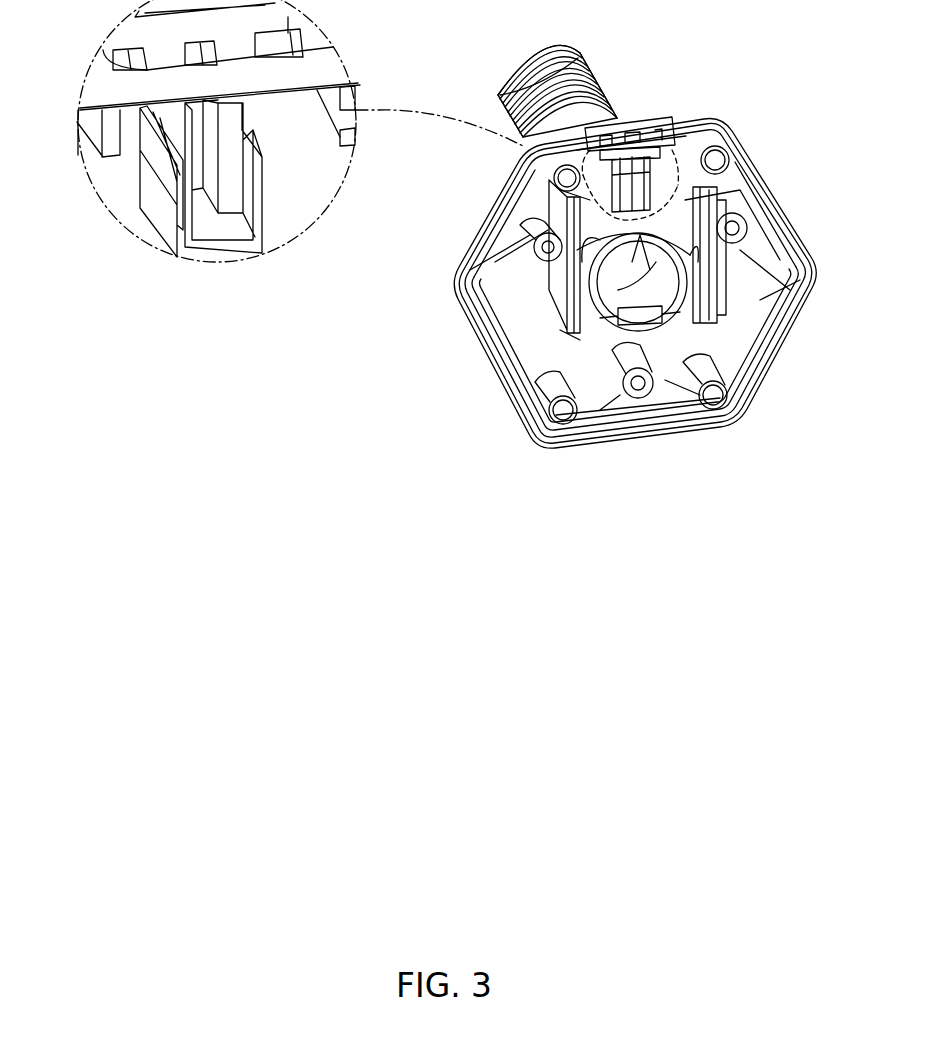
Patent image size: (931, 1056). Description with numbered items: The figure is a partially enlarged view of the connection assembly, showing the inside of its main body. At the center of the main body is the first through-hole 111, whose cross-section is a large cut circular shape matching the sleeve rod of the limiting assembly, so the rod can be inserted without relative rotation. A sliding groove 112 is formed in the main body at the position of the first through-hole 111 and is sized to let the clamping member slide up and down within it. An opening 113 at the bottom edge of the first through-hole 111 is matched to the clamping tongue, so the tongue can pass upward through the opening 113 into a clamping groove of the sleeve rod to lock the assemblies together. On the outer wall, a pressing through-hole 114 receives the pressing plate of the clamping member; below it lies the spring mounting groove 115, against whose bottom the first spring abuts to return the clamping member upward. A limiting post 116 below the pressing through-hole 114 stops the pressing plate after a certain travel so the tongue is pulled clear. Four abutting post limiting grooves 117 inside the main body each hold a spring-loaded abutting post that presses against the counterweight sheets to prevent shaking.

The first through-hole 111 is at (658, 294).
The sliding groove 112 is at (572, 338).
The opening 113 is at (647, 319).
The pressing through-hole 114 is at (629, 126).
The spring mounting groove 115 is at (657, 182).
The limiting post 116 is at (168, 117).
The abutting post limiting groove 117 is at (727, 161).